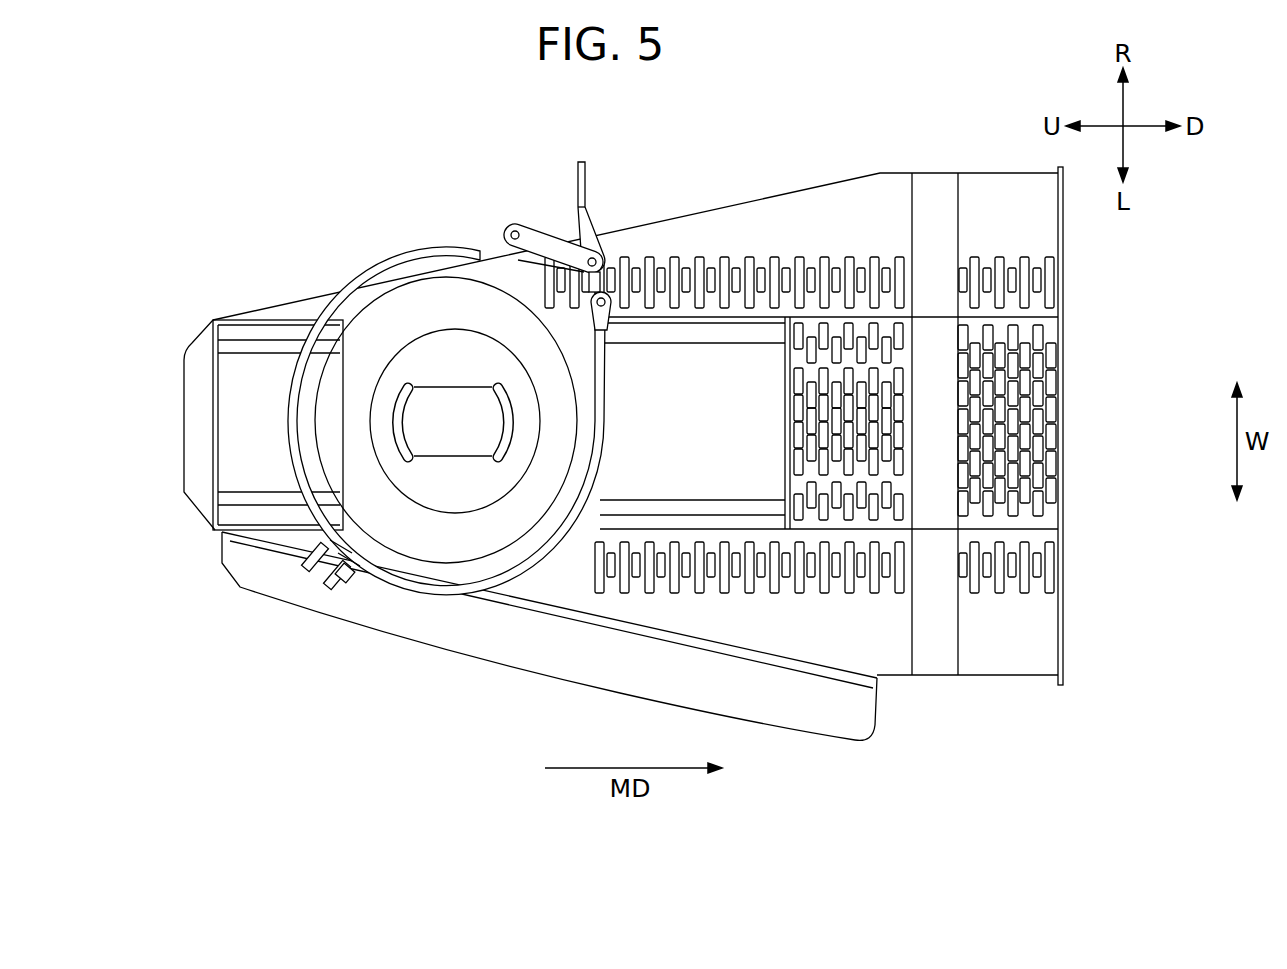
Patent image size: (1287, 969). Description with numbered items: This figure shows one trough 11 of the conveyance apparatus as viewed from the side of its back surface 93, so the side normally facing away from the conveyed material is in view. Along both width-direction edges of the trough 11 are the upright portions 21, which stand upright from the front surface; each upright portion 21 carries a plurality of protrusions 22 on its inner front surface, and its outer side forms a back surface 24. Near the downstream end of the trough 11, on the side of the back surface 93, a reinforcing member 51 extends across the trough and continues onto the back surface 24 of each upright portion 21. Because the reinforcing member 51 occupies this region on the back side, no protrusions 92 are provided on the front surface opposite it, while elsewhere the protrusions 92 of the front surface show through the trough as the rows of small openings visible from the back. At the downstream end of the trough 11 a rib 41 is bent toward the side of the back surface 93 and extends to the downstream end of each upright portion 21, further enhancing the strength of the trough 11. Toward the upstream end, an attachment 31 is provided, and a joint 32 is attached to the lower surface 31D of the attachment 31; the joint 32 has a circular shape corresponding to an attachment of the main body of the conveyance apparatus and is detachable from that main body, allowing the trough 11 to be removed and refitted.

The trough 11 is at (376, 188).
The upright portion 21 is at (1038, 673).
The protrusion 22 is at (1050, 549).
The back surface of upright portion 24 is at (1040, 637).
The attachment 31 is at (232, 394).
The lower surface of attachment 31D is at (245, 442).
The joint 32 is at (392, 308).
The rib 41 is at (1066, 240).
The reinforcing member 51 is at (940, 192).
The protrusion 92 is at (1050, 410).
The back surface 93 is at (1050, 512).